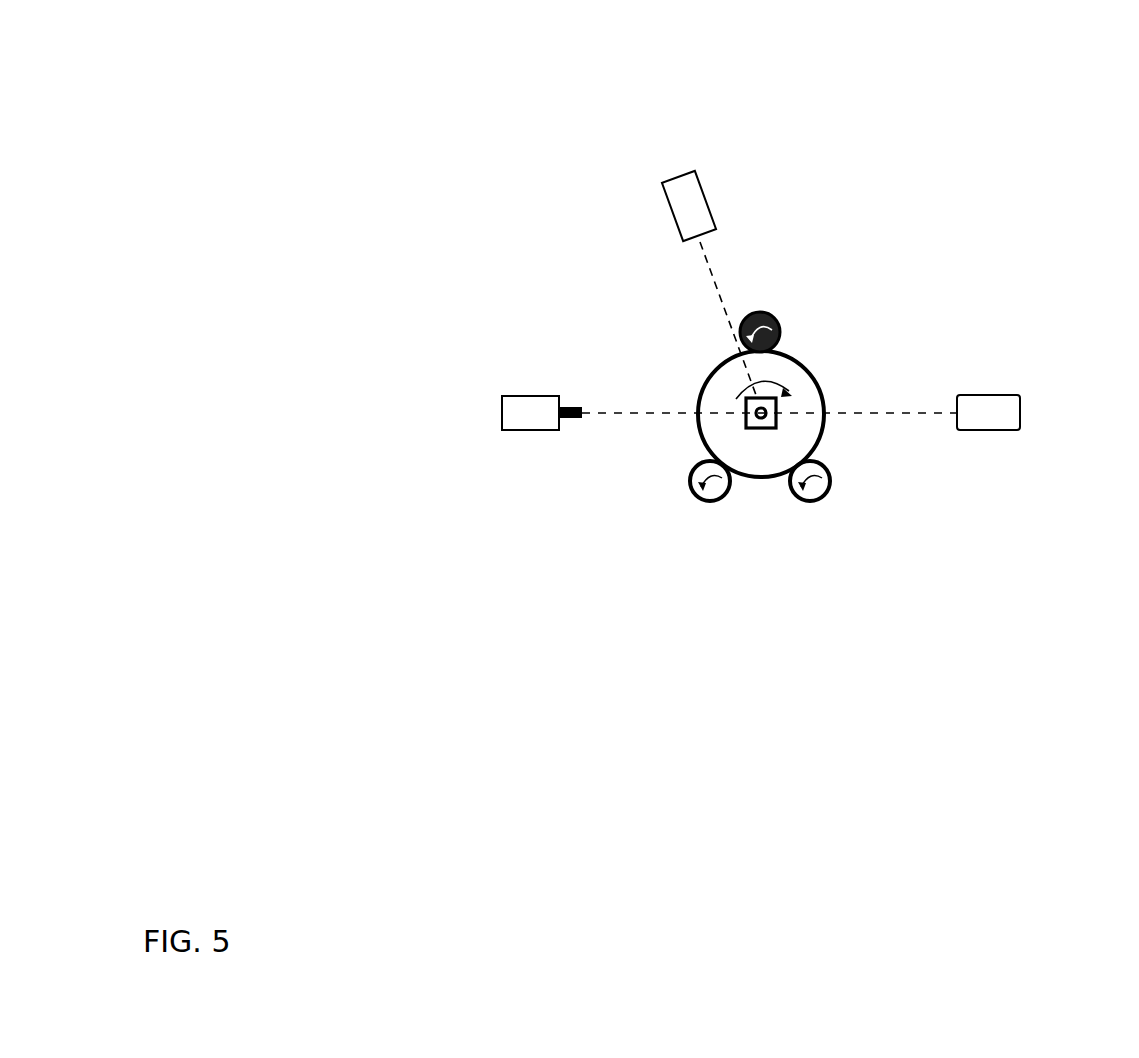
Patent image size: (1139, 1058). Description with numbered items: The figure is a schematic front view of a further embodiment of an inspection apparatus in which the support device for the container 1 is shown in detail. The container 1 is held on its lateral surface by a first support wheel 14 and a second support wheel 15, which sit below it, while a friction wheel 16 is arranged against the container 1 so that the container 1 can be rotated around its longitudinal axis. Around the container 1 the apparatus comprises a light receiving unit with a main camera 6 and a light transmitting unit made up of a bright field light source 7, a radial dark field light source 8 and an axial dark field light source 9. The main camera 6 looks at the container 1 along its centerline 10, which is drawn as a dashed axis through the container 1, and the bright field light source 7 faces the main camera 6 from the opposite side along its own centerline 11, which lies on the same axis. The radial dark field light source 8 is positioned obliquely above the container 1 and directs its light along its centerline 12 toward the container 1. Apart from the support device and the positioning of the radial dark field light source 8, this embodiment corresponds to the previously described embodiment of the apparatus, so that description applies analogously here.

The container 1 is at (812, 328).
The main camera 6 is at (520, 397).
The bright field light source 7 is at (745, 408).
The radial dark field light source 8 is at (702, 190).
The axial dark field light source 9 is at (745, 420).
The centerline of the main camera 10 is at (640, 412).
The centerline of the bright field light source 11 is at (880, 413).
The centerline of the radial dark field light source 12 is at (717, 277).
The first support wheel 14 is at (713, 502).
The second support wheel 15 is at (803, 502).
The friction wheel 16 is at (770, 307).